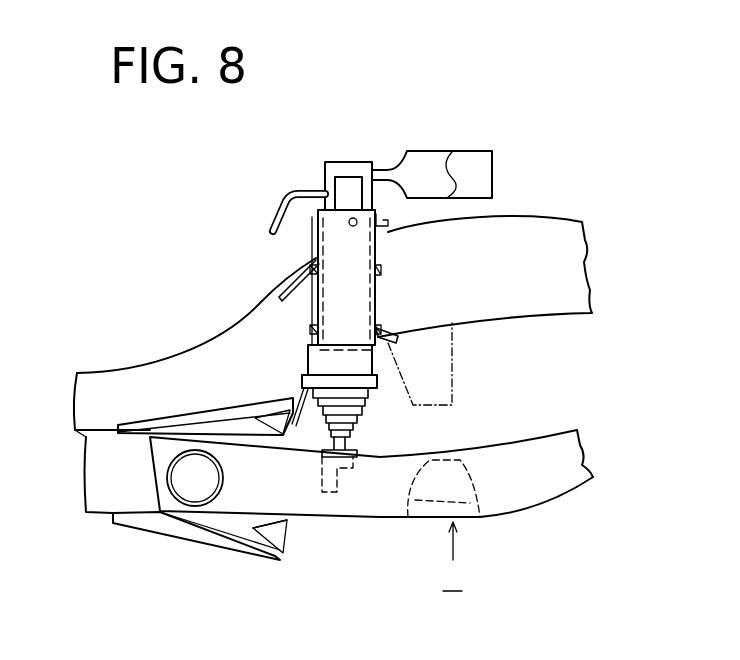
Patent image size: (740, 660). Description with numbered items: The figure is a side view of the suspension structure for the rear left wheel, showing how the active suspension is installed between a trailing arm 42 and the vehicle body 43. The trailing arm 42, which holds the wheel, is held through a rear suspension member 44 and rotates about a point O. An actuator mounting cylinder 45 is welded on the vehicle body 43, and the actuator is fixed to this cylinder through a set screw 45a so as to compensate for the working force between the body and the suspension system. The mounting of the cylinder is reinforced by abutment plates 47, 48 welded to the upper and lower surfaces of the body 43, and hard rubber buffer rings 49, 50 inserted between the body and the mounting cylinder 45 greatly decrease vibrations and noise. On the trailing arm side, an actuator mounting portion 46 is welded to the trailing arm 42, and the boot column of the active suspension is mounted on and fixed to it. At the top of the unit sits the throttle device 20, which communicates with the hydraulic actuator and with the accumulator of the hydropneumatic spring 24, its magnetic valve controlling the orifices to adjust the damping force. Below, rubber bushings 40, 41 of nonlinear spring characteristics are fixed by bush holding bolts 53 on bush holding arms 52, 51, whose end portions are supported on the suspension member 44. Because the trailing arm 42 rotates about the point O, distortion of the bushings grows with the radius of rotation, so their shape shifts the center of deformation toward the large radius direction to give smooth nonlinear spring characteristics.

The throttle device 20 is at (356, 167).
The hydropneumatic spring 24 is at (428, 150).
The vehicle body 43 is at (543, 225).
The actuator mounting cylinder 45 is at (360, 288).
The set screw 45a is at (357, 226).
The abutment plate 48 is at (393, 338).
The hard rubber buffer ring 49 is at (312, 270).
The abutment plate 47 is at (280, 296).
The hard rubber buffer ring 50 is at (308, 330).
The bush holding arm 51 is at (204, 423).
The rubber bushing 41 is at (295, 427).
The actuator mounting portion 46 is at (357, 452).
The trailing arm 42 is at (525, 452).
The point O is at (198, 478).
The rear suspension member 44 is at (100, 502).
The bush holding arm 52 is at (172, 524).
The bush holding bolt 53 is at (260, 560).
The rubber bushing 40 is at (290, 532).